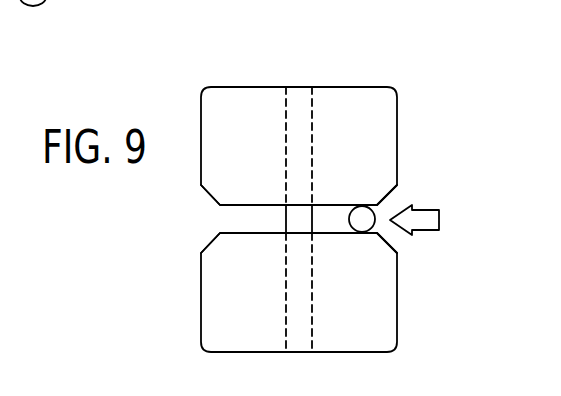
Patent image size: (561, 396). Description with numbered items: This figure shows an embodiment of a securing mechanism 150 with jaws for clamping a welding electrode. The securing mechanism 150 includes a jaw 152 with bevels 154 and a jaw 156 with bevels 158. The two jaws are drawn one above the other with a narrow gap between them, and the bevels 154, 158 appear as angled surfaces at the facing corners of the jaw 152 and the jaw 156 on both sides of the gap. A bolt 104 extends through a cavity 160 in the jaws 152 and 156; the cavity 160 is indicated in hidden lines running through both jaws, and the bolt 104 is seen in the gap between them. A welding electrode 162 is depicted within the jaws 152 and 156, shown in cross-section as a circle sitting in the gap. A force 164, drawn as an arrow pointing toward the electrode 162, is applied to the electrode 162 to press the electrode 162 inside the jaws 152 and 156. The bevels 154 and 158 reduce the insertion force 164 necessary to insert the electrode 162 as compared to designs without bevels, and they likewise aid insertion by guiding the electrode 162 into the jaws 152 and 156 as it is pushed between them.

The securing mechanism 150 is at (455, 71).
The jaw 152 is at (360, 128).
The jaw 156 is at (375, 327).
The bevels 154 is at (211, 196).
The bevels 158 is at (212, 243).
The bolt 104 is at (285, 220).
The cavity 160 is at (283, 120).
The welding electrode 162 is at (362, 232).
The force 164 is at (425, 207).